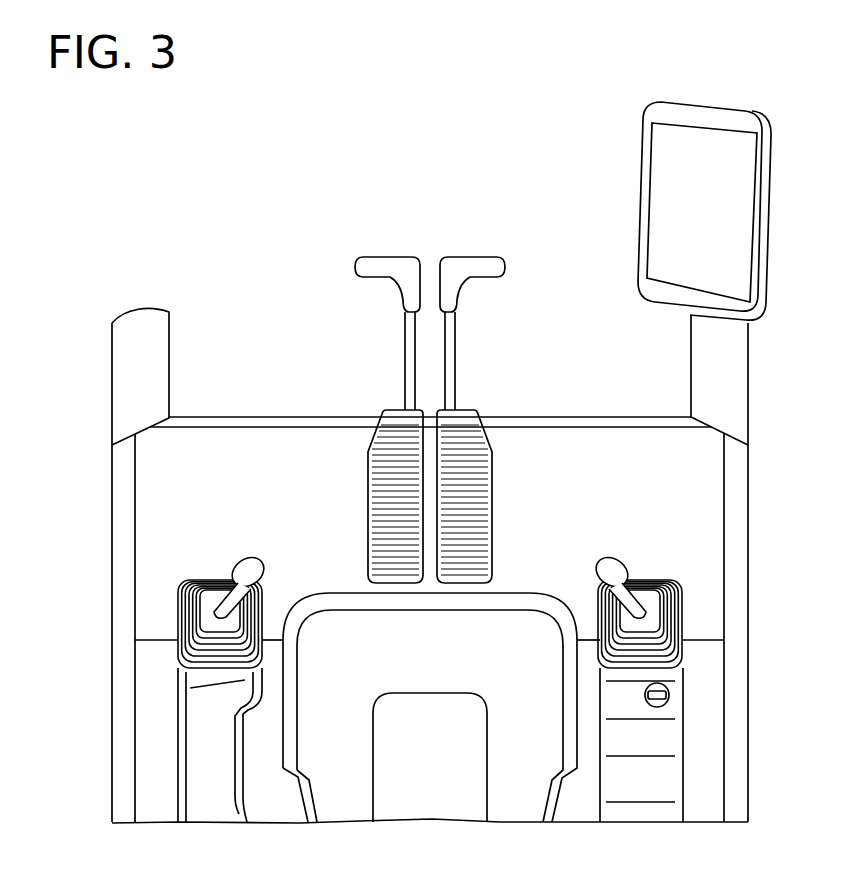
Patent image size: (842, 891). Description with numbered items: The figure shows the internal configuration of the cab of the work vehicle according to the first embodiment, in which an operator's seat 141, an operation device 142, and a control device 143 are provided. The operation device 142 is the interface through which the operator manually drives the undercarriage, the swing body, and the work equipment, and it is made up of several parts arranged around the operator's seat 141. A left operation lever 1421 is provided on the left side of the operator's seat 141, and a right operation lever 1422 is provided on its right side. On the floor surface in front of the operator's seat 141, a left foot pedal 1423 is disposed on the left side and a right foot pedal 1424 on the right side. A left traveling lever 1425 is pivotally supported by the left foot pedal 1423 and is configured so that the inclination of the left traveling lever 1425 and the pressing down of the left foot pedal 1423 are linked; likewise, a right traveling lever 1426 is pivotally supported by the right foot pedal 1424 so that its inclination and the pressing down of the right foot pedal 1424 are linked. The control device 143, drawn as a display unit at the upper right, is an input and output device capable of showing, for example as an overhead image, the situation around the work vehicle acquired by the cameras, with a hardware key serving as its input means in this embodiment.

The operator's seat 141 is at (432, 806).
The operation device 142 is at (256, 315).
The control device 143 is at (640, 175).
The left operation lever 1421 is at (252, 557).
The right operation lever 1422 is at (610, 557).
The left foot pedal 1423 is at (392, 408).
The right foot pedal 1424 is at (468, 408).
The left traveling lever 1425 is at (388, 256).
The right traveling lever 1426 is at (472, 256).